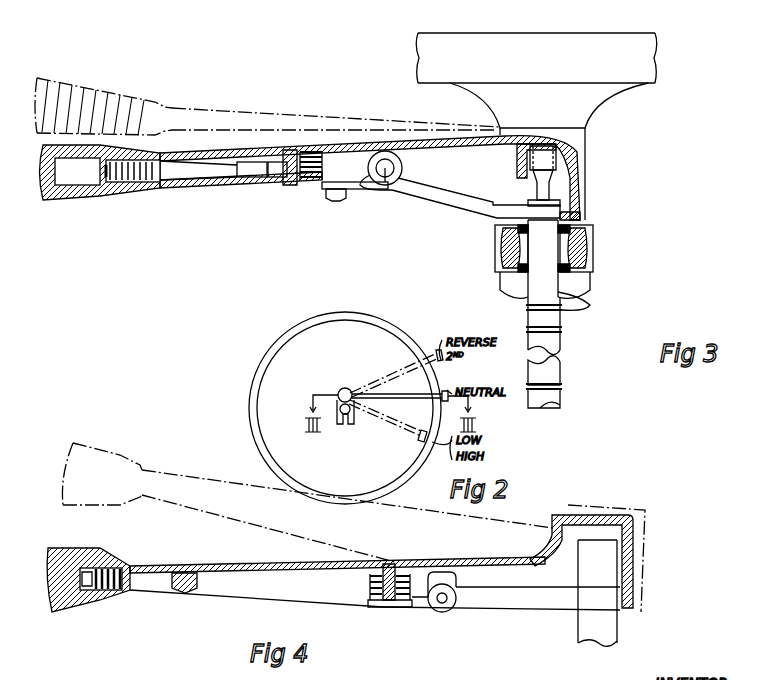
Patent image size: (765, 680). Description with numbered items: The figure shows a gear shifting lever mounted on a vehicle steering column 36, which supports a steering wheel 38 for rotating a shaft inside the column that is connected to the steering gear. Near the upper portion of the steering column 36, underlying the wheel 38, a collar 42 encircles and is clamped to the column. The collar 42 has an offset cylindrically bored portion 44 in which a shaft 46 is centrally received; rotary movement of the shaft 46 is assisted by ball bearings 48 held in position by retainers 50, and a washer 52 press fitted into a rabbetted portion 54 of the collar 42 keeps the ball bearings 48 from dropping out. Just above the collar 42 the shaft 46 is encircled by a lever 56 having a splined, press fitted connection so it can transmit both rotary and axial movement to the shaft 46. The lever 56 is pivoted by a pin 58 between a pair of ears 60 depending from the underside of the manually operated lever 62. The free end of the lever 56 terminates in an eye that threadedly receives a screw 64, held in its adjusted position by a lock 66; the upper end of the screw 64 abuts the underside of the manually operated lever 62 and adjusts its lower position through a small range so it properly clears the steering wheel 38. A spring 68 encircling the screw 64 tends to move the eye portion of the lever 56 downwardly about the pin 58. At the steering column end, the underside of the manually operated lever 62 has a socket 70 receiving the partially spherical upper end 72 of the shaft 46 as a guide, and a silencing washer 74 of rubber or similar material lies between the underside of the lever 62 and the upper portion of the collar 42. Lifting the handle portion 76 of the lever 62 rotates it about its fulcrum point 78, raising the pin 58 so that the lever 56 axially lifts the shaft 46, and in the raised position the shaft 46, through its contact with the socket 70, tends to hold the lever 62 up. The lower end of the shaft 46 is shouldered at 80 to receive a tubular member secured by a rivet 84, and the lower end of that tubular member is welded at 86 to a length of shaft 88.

In FIG. 3, the steering column 36 is at (585, 145).
In FIG. 3, the steering wheel 38 is at (648, 80).
In FIG. 3, the collar 42 is at (593, 255).
In FIG. 3, the offset cylindrically bored portion 44 is at (495, 241).
In FIG. 3, the shaft 46 is at (530, 276).
In FIG. 3, the ball bearings 48 is at (500, 262).
In FIG. 3, the retainers 50 is at (528, 255).
In FIG. 3, the washer 52 is at (520, 272).
In FIG. 3, the rabbetted portion 54 is at (573, 268).
In FIG. 3, the lever 56 is at (455, 196).
In FIG. 4, the lever 56 is at (508, 598).
In FIG. 3, the pin 58 is at (385, 182).
In FIG. 3, the ears 60 is at (398, 152).
In FIG. 3, the manually operated lever 62 is at (290, 150).
In FIG. 4, the manually operated lever 62 is at (185, 594).
In FIG. 3, the screw 64 is at (330, 198).
In FIG. 3, the lock 66 is at (346, 202).
In FIG. 3, the spring 68 is at (322, 172).
In FIG. 4, the spring 68 is at (390, 585).
In FIG. 3, the socket 70 is at (556, 168).
In FIG. 3, the partially spherical upper end 72 is at (560, 186).
In FIG. 3, the silencing washer 74 is at (593, 226).
In FIG. 3, the handle portion 76 is at (48, 200).
In FIG. 4, the handle portion 76 is at (58, 612).
In FIG. 3, the fulcrum point 78 is at (585, 216).
In FIG. 3, the shouldered portion 80 is at (570, 306).
In FIG. 3, the rivet 84 is at (528, 312).
In FIG. 3, the weld 86 is at (565, 383).
In FIG. 3, the length of shaft 88 is at (560, 393).